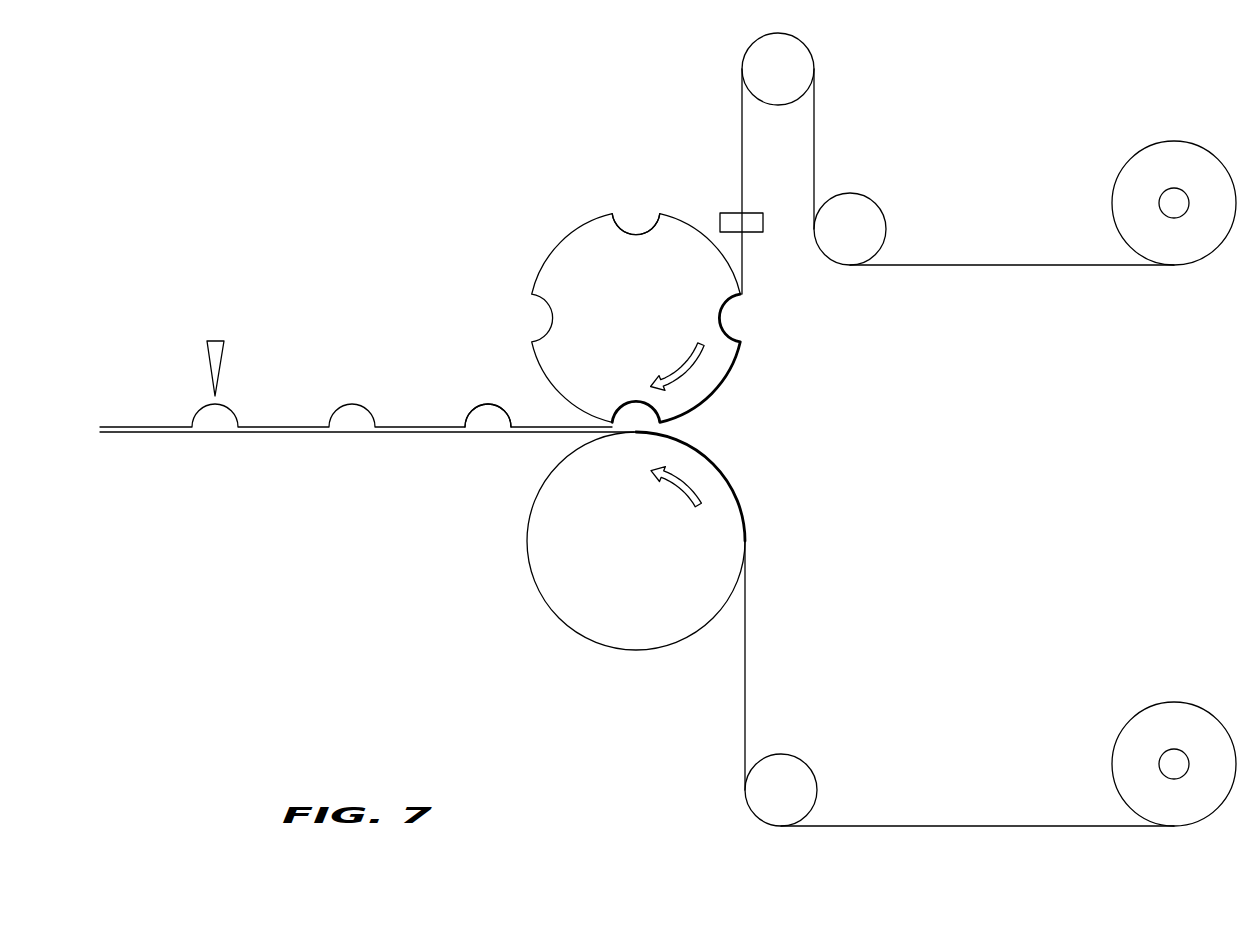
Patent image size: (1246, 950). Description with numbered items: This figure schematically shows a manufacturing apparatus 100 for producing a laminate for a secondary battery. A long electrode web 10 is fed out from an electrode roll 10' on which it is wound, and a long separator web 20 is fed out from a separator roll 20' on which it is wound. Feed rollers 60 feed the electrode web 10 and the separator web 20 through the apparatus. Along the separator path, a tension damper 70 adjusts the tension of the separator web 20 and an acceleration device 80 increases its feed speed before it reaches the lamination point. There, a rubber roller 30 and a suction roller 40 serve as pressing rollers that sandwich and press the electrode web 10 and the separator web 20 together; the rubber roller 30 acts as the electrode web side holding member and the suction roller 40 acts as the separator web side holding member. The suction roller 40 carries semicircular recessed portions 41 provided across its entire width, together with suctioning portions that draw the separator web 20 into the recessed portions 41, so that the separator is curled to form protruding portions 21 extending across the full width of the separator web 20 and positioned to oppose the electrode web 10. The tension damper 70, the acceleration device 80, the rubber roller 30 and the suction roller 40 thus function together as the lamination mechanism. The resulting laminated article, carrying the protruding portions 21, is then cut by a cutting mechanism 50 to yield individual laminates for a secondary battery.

The manufacturing apparatus 100 is at (386, 196).
The electrode web 10 is at (959, 683).
The electrode roll 10' is at (1174, 735).
The separator web 20 is at (637, 321).
The separator roll 20' is at (1174, 178).
The protruding portions 21 is at (475, 403).
The rubber roller 30 is at (650, 549).
The suction roller 40 is at (650, 331).
The recessed portions 41 is at (634, 226).
The cutting mechanism 50 is at (215, 340).
The feed rollers 60 is at (864, 213).
The tension damper 70 is at (793, 70).
The acceleration device 80 is at (759, 228).